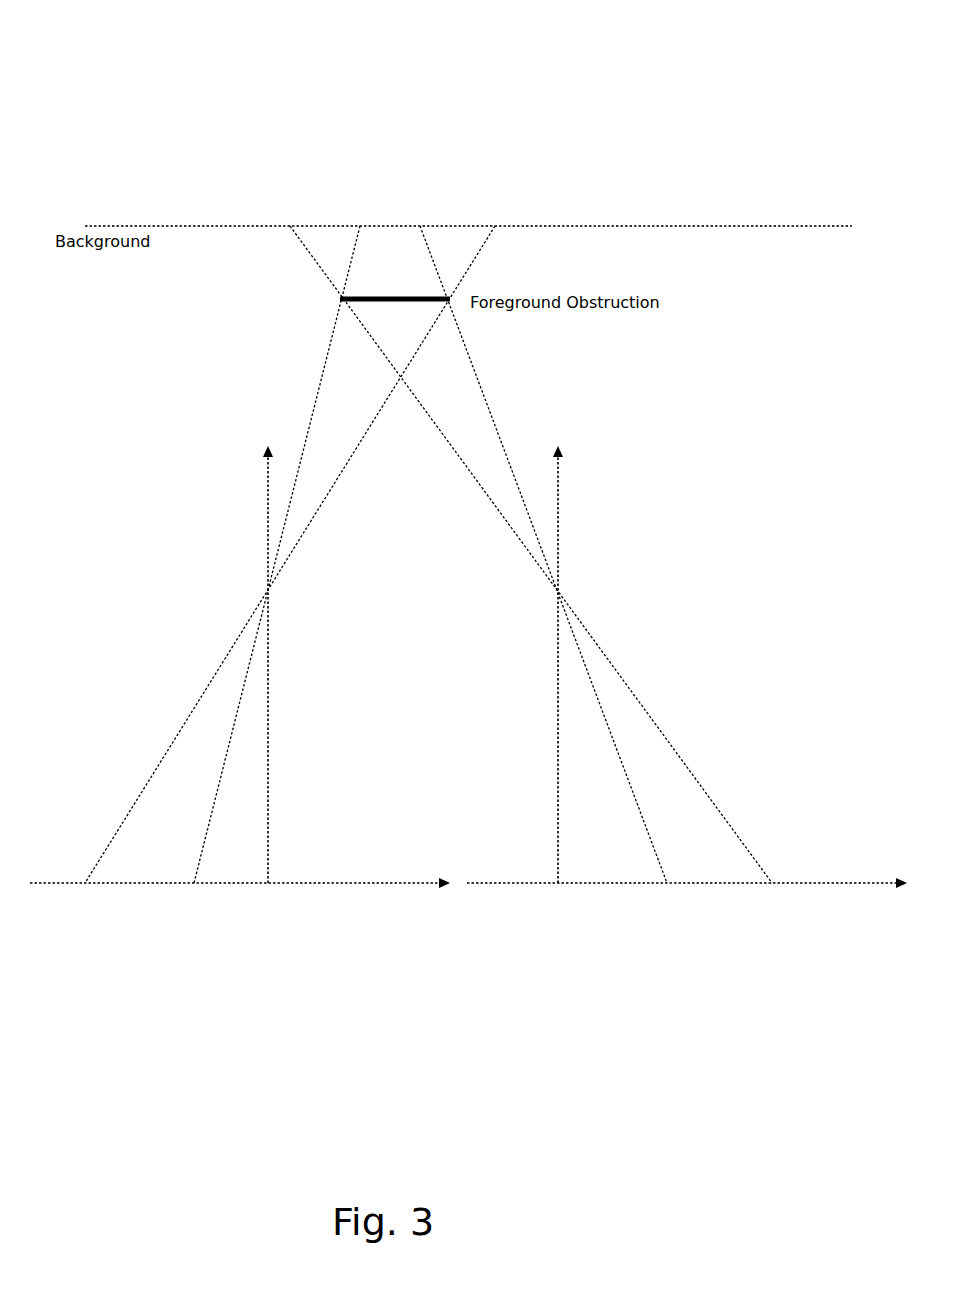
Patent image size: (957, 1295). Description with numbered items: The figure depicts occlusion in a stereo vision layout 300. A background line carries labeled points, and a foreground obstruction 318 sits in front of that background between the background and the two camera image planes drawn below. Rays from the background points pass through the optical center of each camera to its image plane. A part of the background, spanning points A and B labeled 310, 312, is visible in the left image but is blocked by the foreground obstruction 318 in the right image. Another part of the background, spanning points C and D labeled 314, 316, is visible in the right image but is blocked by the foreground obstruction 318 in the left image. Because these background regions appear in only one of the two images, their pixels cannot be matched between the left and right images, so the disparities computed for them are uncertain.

The scene diagram with stereo camera image planes 300 is at (160, 98).
The background point A 310 is at (293, 195).
The background point B 312 is at (364, 195).
The background point C 314 is at (435, 195).
The background point D 316 is at (505, 195).
The foreground obstruction 318 is at (421, 297).